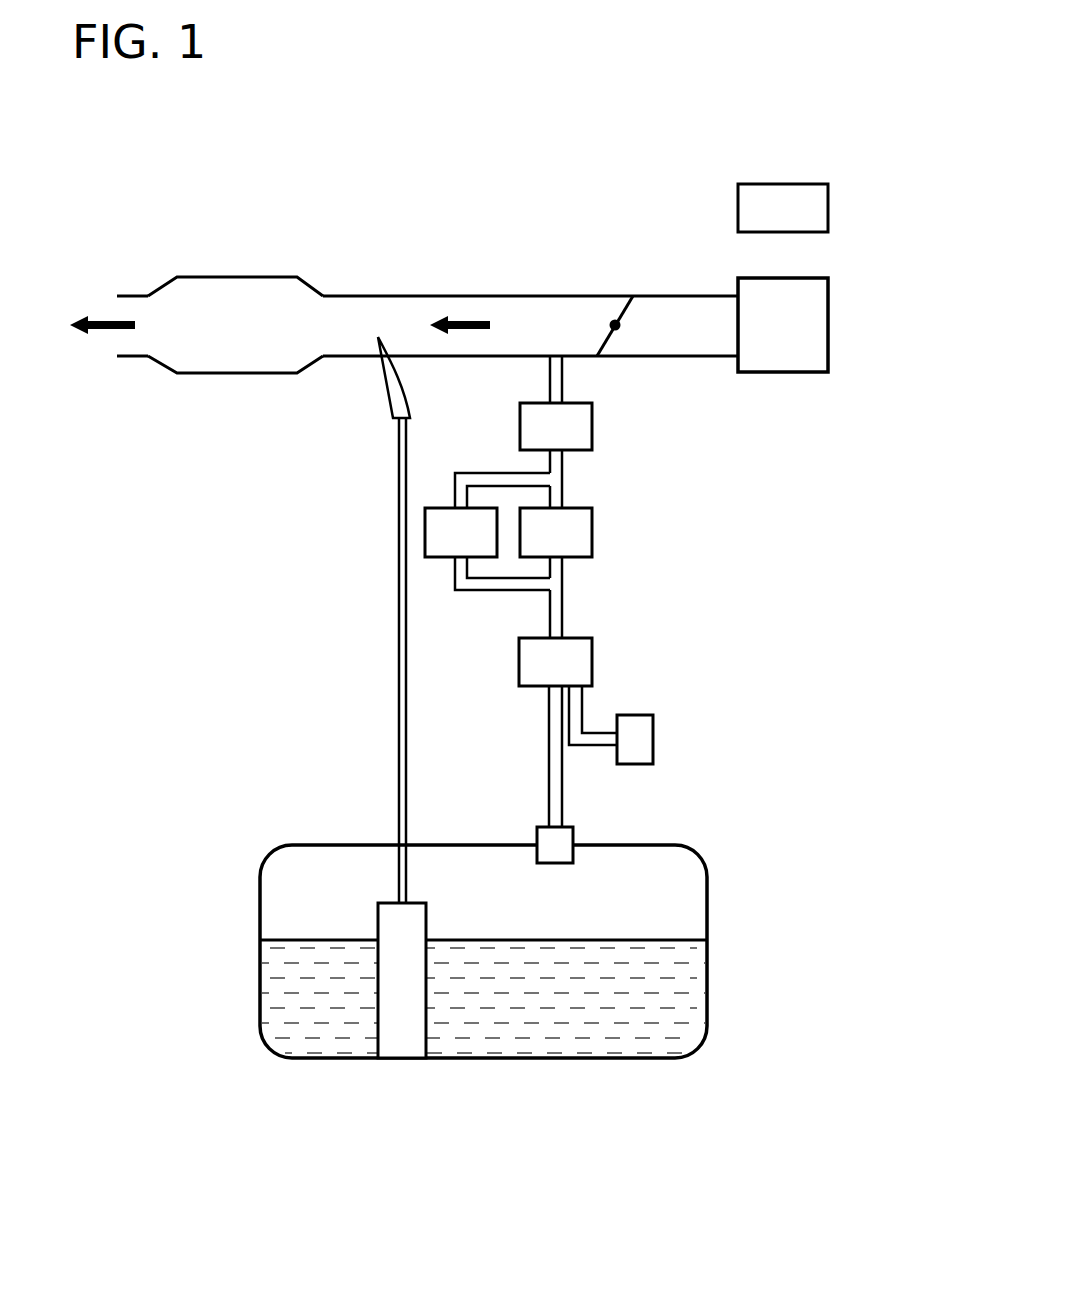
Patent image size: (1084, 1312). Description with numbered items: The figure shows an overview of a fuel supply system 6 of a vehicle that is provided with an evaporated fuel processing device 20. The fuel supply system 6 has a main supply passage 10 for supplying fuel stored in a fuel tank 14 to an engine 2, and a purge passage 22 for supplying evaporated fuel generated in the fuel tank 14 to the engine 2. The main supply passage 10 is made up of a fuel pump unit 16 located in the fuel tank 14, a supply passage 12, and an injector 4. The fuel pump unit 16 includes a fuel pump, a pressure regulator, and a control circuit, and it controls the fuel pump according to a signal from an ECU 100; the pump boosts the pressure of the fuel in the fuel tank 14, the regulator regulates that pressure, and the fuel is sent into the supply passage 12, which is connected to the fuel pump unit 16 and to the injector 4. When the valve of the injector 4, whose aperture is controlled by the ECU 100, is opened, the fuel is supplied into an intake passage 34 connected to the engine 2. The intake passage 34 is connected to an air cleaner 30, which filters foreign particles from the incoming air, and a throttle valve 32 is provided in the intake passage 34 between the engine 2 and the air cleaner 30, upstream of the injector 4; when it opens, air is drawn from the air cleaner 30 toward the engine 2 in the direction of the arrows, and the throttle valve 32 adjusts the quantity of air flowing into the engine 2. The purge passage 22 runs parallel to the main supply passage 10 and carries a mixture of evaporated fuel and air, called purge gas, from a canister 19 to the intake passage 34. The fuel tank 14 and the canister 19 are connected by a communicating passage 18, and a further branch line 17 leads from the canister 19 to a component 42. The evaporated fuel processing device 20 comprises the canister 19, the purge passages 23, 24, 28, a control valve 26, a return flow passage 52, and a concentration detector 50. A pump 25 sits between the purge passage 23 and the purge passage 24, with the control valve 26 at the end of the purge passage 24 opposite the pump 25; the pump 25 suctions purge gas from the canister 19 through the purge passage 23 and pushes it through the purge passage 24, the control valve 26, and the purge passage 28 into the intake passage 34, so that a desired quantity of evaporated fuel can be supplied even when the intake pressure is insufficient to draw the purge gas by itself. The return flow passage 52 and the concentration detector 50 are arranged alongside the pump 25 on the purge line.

The engine 2 is at (236, 277).
The injector 4 is at (393, 402).
The fuel supply system 6 is at (203, 519).
The main supply passage 10 is at (350, 634).
The supply passage 12 is at (400, 713).
The fuel tank 14 is at (258, 968).
The fuel pump unit 16 is at (402, 1045).
The branch pipe 17 is at (577, 702).
The communicating passage 18 is at (555, 772).
The canister 19 is at (582, 655).
The evaporated fuel processing device 20 is at (700, 500).
The purge passage 22 is at (697, 613).
The purge passage 23 is at (555, 597).
The purge passage 24 is at (555, 467).
The pump 25 is at (580, 532).
The control valve 26 is at (580, 425).
The purge passage 28 is at (553, 378).
The air cleaner 30 is at (815, 325).
The throttle valve 32 is at (615, 296).
The intake passage 34 is at (532, 296).
The sensor 42 is at (647, 735).
The concentration detector 50 is at (445, 543).
The return flow passage 52 is at (483, 478).
The ECU 100 is at (828, 209).